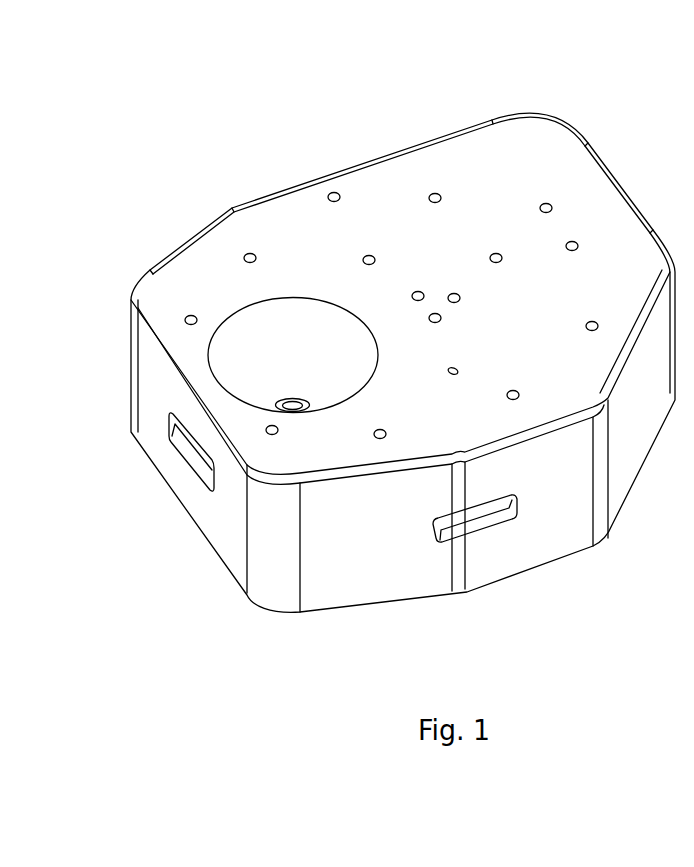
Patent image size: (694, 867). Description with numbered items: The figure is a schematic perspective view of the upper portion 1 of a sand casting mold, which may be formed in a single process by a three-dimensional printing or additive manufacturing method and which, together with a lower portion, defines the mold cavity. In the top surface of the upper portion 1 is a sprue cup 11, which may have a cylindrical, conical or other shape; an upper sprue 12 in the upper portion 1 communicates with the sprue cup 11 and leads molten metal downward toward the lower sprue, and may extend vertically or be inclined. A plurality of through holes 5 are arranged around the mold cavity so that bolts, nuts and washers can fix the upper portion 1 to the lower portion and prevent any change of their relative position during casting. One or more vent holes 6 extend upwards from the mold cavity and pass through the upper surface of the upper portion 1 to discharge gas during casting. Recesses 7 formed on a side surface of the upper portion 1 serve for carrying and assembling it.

The upper portion 1 is at (580, 72).
The through holes 5 is at (433, 193).
The vent holes 6 is at (416, 291).
The recesses 7 is at (475, 520).
The sprue cup 11 is at (320, 330).
The upper sprue 12 is at (288, 402).